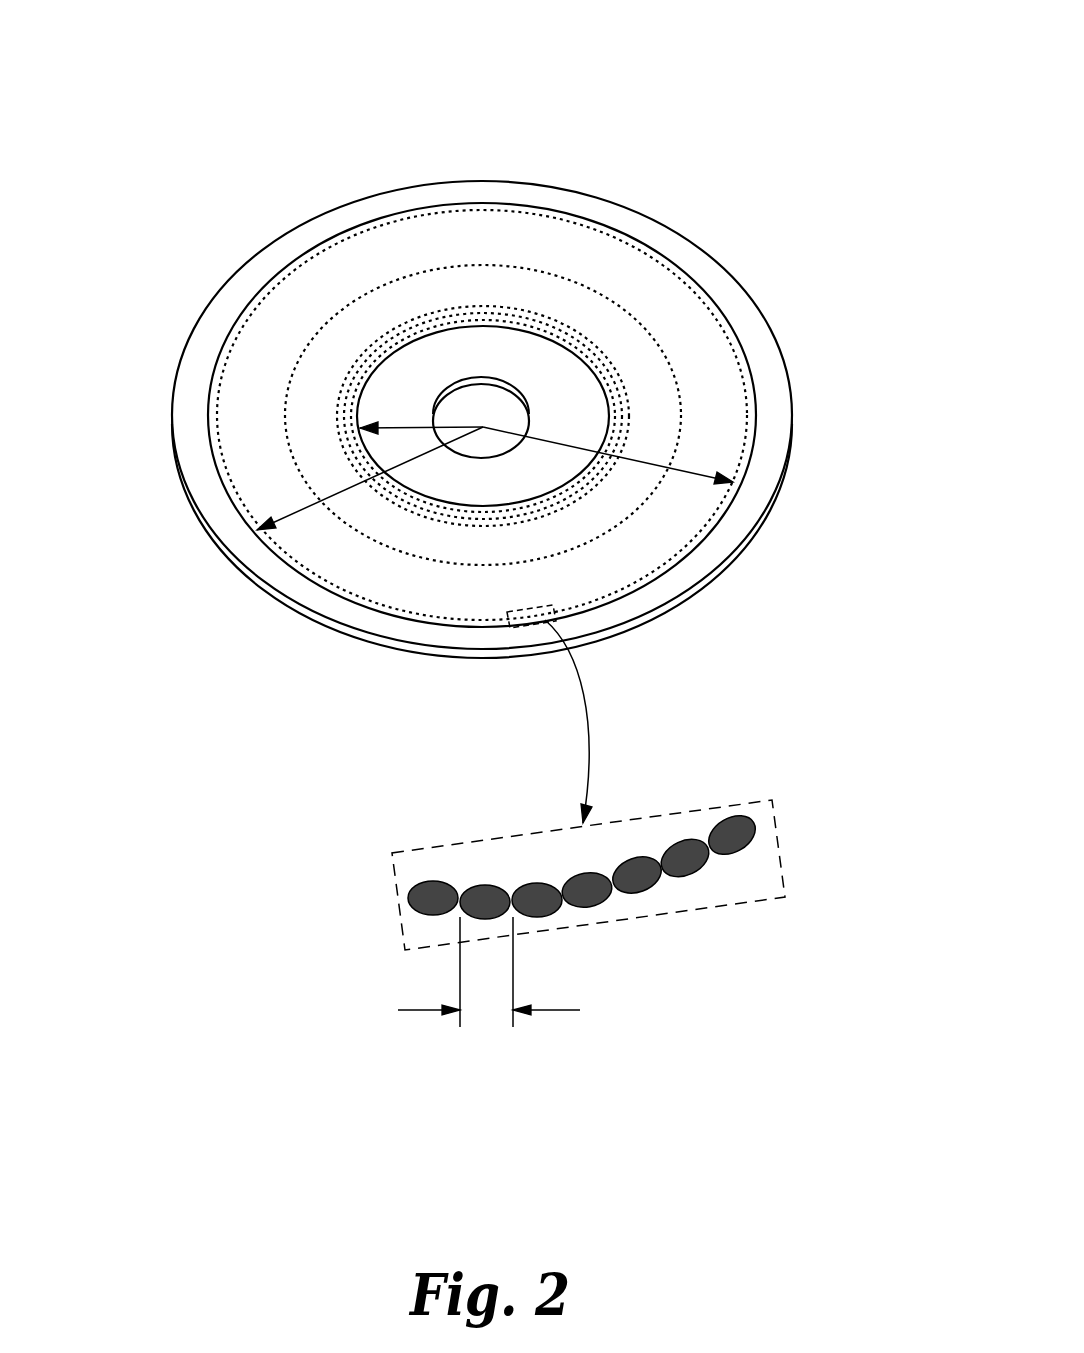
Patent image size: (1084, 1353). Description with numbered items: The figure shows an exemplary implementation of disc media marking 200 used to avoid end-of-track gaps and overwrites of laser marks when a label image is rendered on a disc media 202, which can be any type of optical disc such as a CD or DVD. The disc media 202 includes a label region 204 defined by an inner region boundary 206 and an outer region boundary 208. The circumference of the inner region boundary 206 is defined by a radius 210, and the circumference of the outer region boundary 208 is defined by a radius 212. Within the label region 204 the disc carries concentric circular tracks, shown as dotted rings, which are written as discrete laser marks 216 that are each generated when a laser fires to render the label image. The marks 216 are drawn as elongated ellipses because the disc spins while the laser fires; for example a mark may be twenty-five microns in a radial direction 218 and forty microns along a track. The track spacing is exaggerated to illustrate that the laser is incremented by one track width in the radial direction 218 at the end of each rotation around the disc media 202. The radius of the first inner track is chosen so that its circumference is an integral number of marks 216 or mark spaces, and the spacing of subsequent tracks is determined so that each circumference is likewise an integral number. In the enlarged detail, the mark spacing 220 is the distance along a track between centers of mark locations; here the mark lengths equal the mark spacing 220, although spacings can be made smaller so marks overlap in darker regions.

The disc media marking 200 is at (506, 412).
The disc media 202 is at (540, 182).
The label region 204 is at (516, 450).
The inner region boundary 206 is at (400, 338).
The outer region boundary 208 is at (278, 273).
The radius 210 is at (392, 427).
The radius 212 is at (298, 512).
The laser marks 216 is at (603, 898).
The radial direction 218 is at (682, 472).
The mark spacing 220 is at (637, 1020).